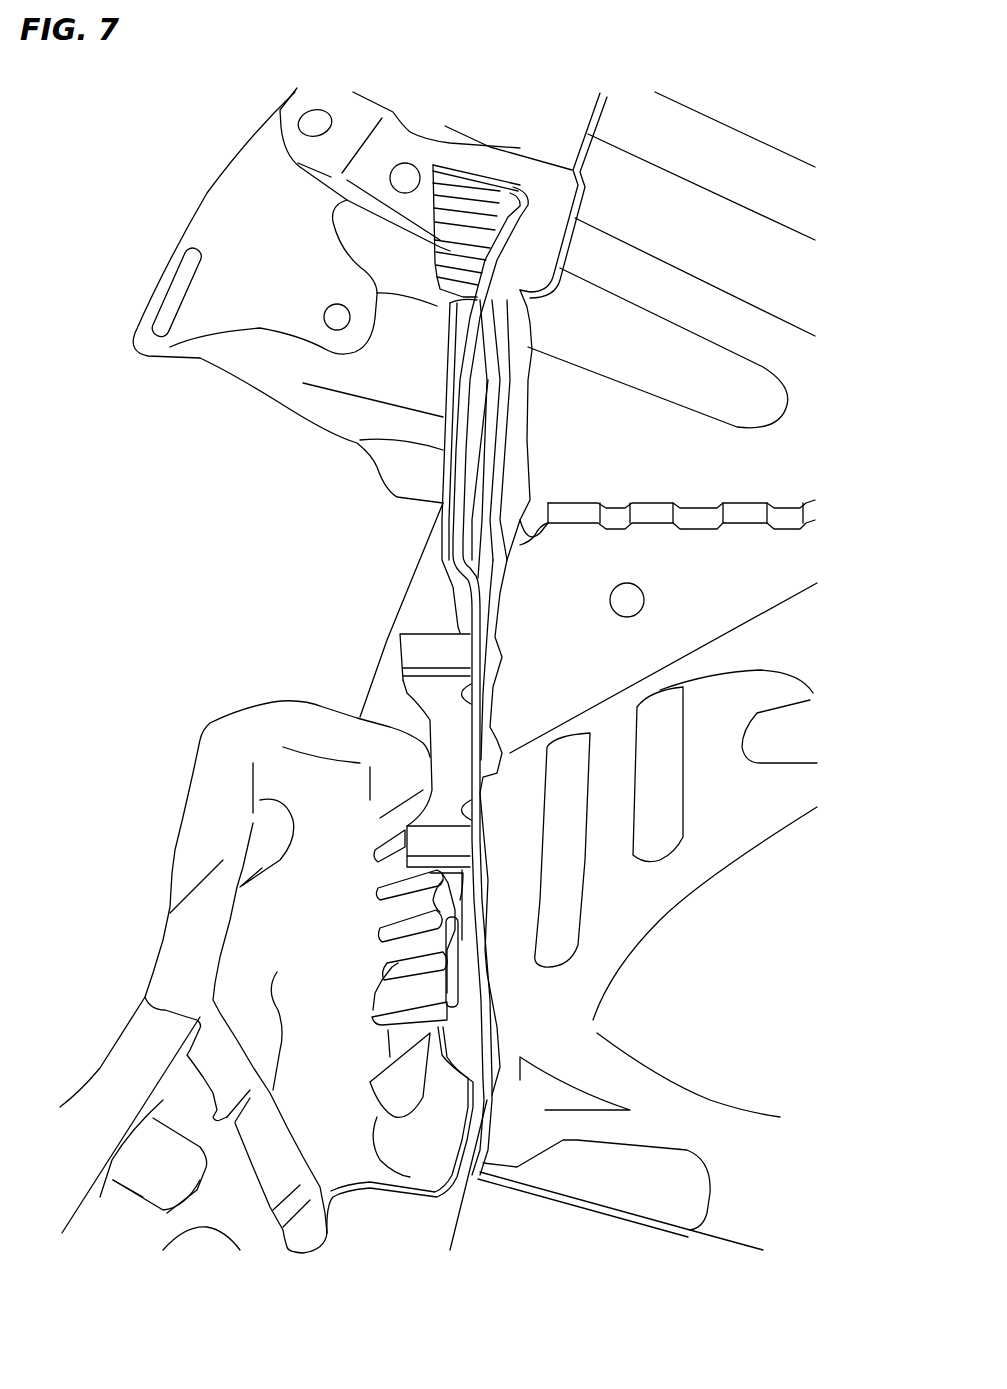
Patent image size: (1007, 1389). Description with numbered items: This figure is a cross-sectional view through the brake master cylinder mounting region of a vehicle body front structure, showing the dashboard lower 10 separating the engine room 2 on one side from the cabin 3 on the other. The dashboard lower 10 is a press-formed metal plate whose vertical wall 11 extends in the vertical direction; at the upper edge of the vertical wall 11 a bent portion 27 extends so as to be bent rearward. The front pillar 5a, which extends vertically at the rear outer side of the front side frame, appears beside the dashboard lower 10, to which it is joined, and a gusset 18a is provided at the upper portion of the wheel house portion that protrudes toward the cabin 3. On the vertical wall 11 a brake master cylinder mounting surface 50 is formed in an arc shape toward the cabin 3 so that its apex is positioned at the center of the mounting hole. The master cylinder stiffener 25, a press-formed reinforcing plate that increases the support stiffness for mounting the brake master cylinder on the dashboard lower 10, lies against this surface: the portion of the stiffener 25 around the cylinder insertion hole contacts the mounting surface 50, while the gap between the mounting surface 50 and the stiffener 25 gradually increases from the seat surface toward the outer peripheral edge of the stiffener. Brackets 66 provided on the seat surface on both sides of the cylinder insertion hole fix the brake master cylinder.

The front pillar 5a is at (212, 193).
The bent portion 27 is at (473, 172).
The dashboard lower 10 is at (548, 335).
The brake master cylinder mounting surface 50 is at (513, 485).
The master cylinder stiffener 25 is at (427, 562).
The cabin 3 is at (237, 597).
The engine room 2 is at (860, 597).
The bracket 66 is at (430, 725).
The gusset 18a is at (253, 897).
The vertical wall 11 is at (485, 950).